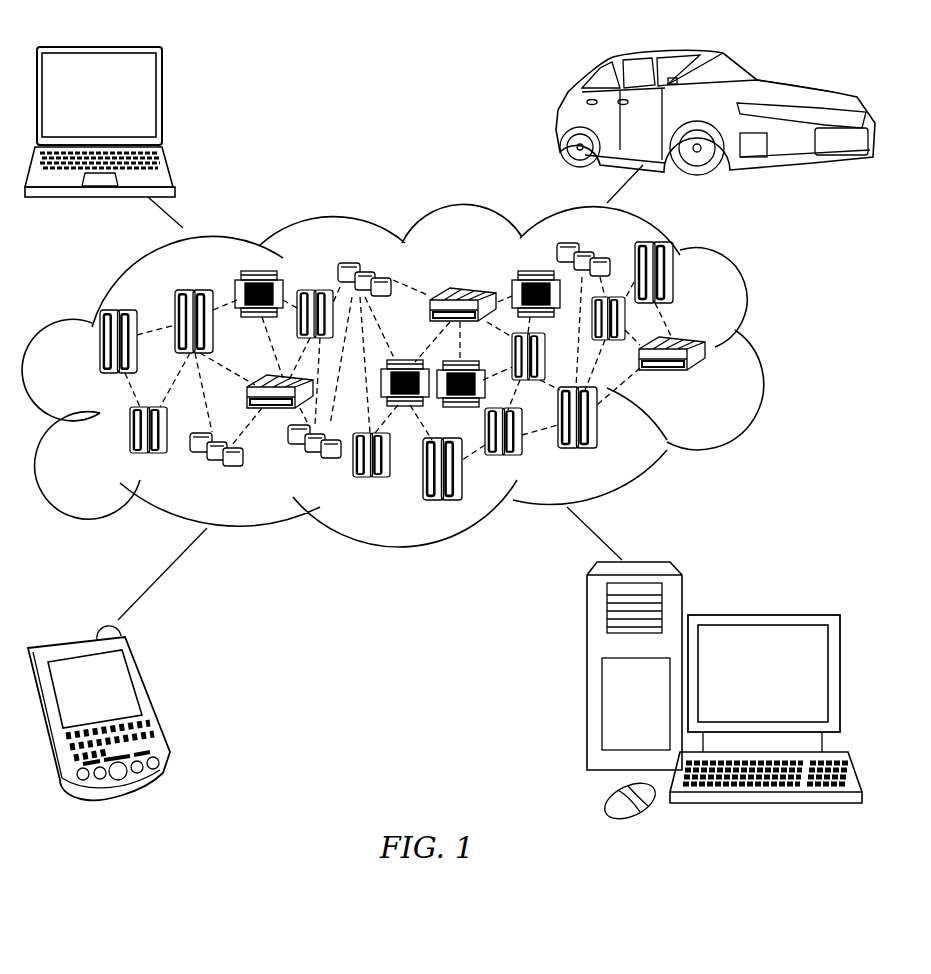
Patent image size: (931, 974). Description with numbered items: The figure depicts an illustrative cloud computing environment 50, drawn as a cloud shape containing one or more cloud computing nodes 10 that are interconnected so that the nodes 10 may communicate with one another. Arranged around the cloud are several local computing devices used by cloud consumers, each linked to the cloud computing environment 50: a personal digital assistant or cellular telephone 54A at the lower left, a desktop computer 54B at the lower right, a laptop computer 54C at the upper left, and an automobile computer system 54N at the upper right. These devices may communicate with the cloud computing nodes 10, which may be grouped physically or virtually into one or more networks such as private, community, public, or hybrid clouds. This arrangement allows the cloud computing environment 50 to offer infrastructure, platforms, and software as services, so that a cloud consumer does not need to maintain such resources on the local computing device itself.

The cloud computing nodes 10 is at (706, 378).
The cloud computing environment 50 is at (763, 355).
The personal digital assistant or cellular telephone 54A is at (153, 699).
The desktop computer 54B is at (762, 615).
The laptop computer 54C is at (163, 103).
The automobile computer system 54N is at (560, 118).